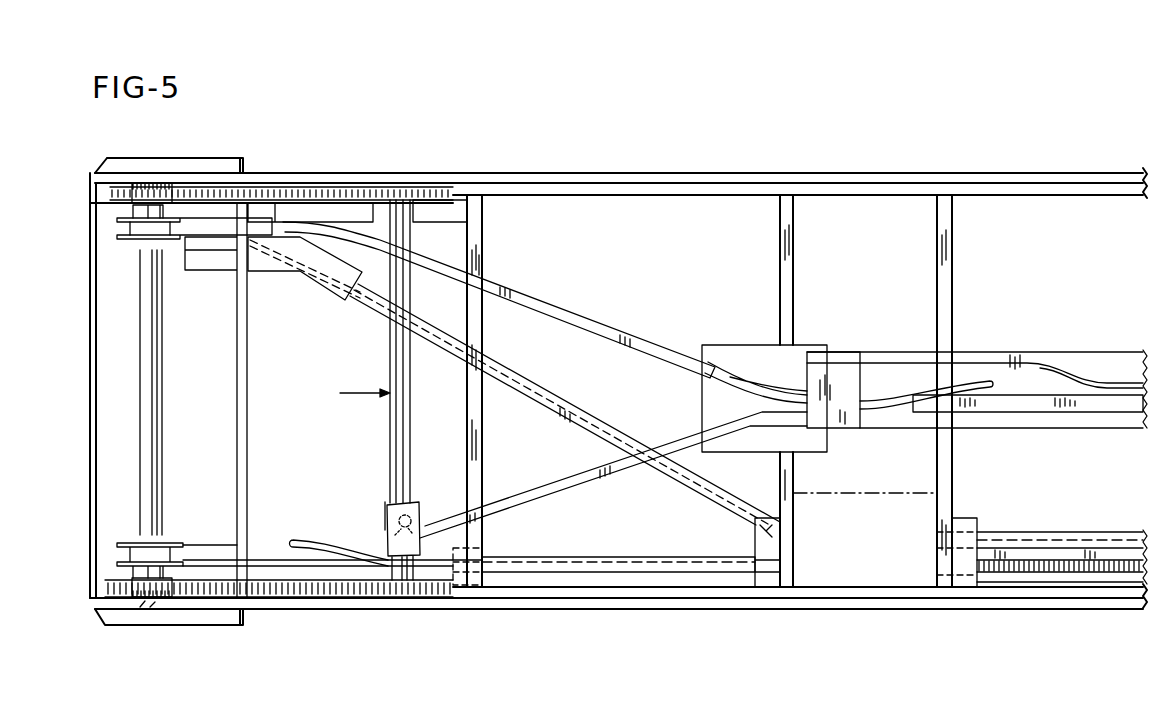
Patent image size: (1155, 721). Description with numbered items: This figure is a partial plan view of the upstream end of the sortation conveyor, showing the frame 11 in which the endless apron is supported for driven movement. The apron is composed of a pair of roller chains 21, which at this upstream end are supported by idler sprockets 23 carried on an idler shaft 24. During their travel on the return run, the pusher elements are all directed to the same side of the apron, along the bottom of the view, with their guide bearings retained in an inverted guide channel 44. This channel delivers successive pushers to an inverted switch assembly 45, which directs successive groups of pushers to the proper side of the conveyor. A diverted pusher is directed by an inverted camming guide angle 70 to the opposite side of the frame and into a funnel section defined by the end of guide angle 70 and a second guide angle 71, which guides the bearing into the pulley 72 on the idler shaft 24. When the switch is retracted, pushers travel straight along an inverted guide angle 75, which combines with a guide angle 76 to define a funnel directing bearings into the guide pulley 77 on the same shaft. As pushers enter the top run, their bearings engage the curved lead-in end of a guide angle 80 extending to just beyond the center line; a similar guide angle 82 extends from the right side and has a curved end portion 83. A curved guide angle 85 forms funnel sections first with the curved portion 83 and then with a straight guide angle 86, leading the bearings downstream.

The frame 11 is at (670, 168).
The roller chains 21 is at (292, 192).
The idler sprockets 23 is at (182, 193).
The idler shaft 24 is at (163, 355).
The inverted guide channel 44 is at (1072, 552).
The inverted switch assembly 45 is at (874, 552).
The inverted camming guide angle 70 is at (575, 405).
The second guide angle 71 is at (259, 205).
The pulley 72 is at (118, 228).
The inverted guide angle 75 is at (622, 558).
The guide angle 76 is at (288, 538).
The guide pulley 77 is at (128, 545).
The guide angle 80 is at (590, 331).
The guide angle 82 is at (555, 482).
The curved end portion 83 is at (853, 428).
The curved guide angle 85 is at (887, 352).
The straight guide angle 86 is at (1075, 412).